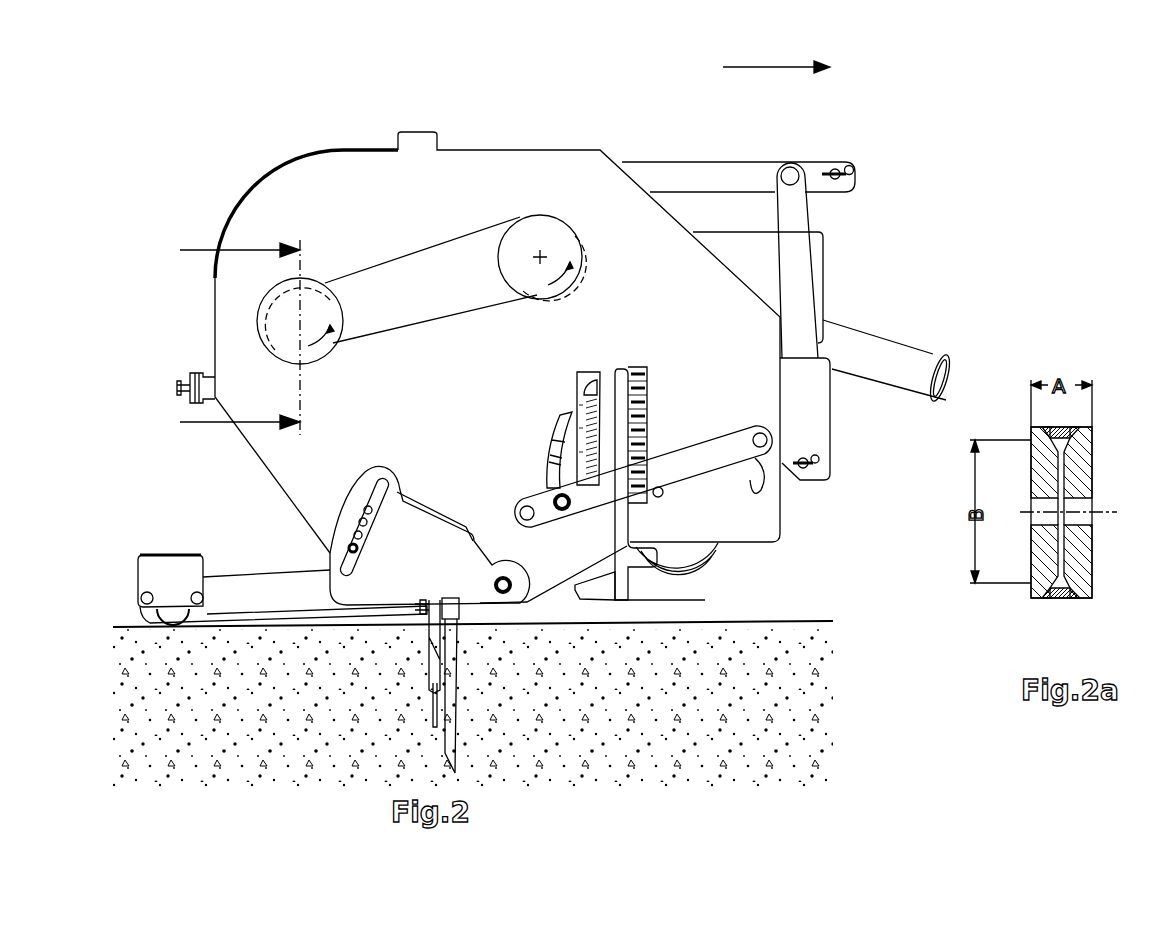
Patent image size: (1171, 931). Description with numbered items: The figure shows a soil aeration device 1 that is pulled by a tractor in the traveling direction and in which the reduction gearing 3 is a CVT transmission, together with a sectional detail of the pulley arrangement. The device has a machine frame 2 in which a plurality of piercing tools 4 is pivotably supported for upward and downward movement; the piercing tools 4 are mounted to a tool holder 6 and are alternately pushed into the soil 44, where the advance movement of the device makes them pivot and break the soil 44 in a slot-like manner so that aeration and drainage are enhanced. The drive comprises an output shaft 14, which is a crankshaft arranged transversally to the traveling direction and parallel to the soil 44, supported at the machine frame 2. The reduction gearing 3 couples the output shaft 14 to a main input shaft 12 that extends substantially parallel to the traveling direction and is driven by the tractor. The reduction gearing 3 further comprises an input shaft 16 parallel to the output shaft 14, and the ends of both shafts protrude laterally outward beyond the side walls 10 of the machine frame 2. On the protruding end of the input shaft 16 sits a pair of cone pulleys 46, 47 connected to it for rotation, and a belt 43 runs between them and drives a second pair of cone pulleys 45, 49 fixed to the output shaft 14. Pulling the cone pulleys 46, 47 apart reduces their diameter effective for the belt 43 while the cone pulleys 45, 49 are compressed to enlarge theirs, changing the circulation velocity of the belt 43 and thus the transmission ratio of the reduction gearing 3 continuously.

In FIG. 2, the soil aeration device 1 is at (213, 147).
In FIG. 2, the machine frame 2 is at (623, 220).
In FIG. 2, the reduction gearing 3 is at (356, 233).
In FIG. 2, the piercing tools 4 is at (447, 740).
In FIG. 2, the tool holder 6 is at (467, 612).
In FIG. 2, the side walls 10 is at (692, 329).
In FIG. 2, the main input shaft 12 is at (887, 360).
In FIG. 2, the output shaft 14 is at (552, 166).
In FIG. 2, the input shaft 16 is at (225, 316).
In FIG. 2A, the input shaft 16 is at (1107, 512).
In FIG. 2, the belt 43 is at (412, 253).
In FIG. 2A, the belt 43 is at (1068, 427).
In FIG. 2, the soil 44 is at (767, 673).
In FIG. 2, the cone pulley 45 is at (542, 166).
In FIG. 2, the cone pulley 46 is at (225, 316).
In FIG. 2A, the cone pulley 46 is at (1077, 467).
In FIG. 2, the cone pulley 47 is at (290, 307).
In FIG. 2A, the cone pulley 47 is at (1040, 468).
In FIG. 2, the cone pulley 49 is at (532, 233).